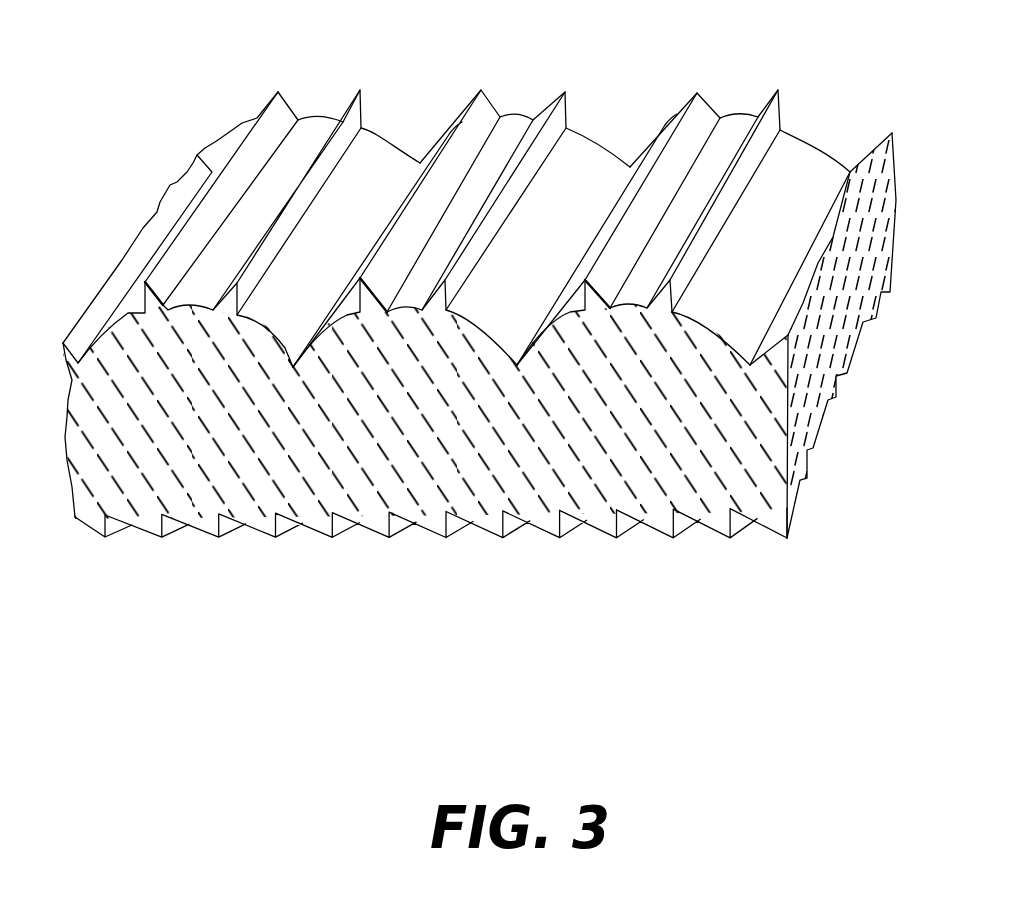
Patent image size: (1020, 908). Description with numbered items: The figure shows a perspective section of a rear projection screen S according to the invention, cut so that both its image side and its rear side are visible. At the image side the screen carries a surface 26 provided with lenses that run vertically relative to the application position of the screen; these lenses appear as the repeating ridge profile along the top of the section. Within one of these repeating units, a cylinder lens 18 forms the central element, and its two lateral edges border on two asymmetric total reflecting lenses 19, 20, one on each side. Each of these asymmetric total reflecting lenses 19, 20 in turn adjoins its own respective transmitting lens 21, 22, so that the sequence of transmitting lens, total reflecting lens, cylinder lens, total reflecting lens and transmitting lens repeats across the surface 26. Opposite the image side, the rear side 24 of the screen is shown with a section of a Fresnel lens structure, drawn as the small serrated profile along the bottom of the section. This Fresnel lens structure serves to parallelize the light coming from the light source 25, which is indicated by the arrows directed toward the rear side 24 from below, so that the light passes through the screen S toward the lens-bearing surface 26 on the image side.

The surface 26 is at (432, 112).
The transmitting lens 22 is at (658, 133).
The asymmetric total reflecting lens 20 is at (700, 112).
The cylinder lens 18 is at (746, 117).
The asymmetric total reflecting lens 19 is at (780, 120).
The transmitting lens 21 is at (820, 160).
The optical sheet S is at (767, 493).
The rear side 24 is at (696, 526).
The light source 25 is at (382, 604).